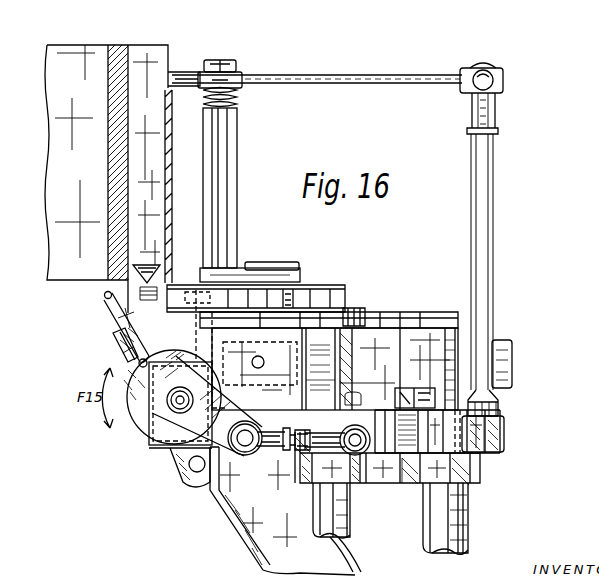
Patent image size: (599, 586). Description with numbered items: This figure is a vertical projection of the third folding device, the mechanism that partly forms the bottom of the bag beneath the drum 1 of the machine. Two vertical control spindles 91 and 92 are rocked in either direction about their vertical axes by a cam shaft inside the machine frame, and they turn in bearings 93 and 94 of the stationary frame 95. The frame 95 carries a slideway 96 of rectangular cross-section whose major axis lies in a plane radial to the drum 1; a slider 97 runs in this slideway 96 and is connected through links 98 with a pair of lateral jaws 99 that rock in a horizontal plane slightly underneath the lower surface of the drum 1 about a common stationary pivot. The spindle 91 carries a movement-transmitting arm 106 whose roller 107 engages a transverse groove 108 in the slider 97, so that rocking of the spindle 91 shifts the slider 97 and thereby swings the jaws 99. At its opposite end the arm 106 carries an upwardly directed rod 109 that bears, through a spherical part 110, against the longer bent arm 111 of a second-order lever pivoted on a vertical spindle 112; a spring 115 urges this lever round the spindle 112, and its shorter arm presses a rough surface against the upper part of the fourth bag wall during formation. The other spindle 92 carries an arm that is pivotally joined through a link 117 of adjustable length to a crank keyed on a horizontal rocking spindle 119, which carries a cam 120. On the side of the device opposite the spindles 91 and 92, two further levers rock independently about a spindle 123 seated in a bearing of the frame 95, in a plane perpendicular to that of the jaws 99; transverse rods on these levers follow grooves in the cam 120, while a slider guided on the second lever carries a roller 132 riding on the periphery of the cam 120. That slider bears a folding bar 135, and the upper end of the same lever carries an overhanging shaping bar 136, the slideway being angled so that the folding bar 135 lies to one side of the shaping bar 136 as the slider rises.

The drum 1 is at (70, 62).
The vertical control spindle 91 is at (464, 530).
The vertical control spindle 92 is at (350, 522).
The bearing 93 is at (369, 448).
The bearing 94 is at (478, 484).
The stationary frame 95 is at (232, 512).
The slideway 96 is at (500, 345).
The slider 97 is at (433, 340).
The links 98 is at (333, 320).
The lateral jaws 99 is at (170, 292).
The arm 106 is at (500, 432).
The roller 107 is at (397, 410).
The transverse groove 108 is at (415, 390).
The rod 109 is at (482, 165).
The spherical part 110 is at (492, 69).
The longer bent arm 111 is at (383, 77).
The vertical spindle 112 is at (218, 61).
The spring 115 is at (239, 93).
The link 117 is at (267, 447).
The horizontal rocking spindle 119 is at (160, 425).
The cam 120 is at (165, 358).
The spindle 123 is at (182, 470).
The roller 132 is at (126, 360).
The folding bar 135 is at (134, 324).
The shaping bar 136 is at (104, 296).